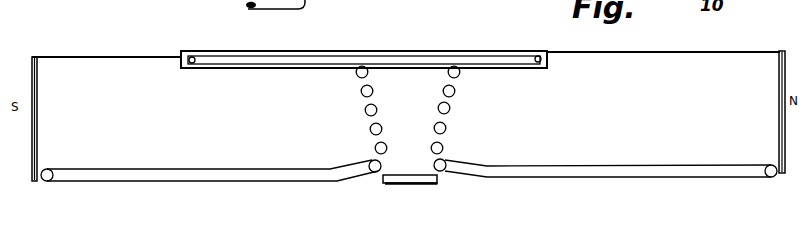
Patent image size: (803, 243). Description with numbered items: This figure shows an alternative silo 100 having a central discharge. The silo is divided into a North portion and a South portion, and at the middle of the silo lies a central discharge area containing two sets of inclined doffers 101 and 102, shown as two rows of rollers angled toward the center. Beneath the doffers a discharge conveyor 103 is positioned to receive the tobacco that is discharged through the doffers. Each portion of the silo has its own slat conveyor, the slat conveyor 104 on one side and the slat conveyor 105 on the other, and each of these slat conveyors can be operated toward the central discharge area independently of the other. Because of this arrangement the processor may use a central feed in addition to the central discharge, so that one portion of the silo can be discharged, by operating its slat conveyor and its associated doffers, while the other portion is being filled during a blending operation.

The silo 100 is at (249, 198).
The inclined doffers 101 is at (366, 117).
The inclined doffers 102 is at (452, 112).
The discharge conveyor 103 is at (420, 186).
The slat conveyor 104 is at (248, 167).
The slat conveyor 105 is at (593, 164).